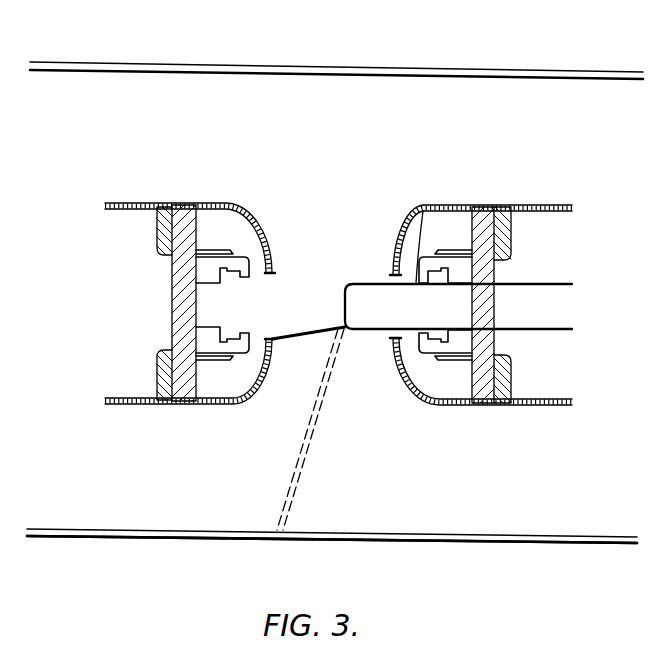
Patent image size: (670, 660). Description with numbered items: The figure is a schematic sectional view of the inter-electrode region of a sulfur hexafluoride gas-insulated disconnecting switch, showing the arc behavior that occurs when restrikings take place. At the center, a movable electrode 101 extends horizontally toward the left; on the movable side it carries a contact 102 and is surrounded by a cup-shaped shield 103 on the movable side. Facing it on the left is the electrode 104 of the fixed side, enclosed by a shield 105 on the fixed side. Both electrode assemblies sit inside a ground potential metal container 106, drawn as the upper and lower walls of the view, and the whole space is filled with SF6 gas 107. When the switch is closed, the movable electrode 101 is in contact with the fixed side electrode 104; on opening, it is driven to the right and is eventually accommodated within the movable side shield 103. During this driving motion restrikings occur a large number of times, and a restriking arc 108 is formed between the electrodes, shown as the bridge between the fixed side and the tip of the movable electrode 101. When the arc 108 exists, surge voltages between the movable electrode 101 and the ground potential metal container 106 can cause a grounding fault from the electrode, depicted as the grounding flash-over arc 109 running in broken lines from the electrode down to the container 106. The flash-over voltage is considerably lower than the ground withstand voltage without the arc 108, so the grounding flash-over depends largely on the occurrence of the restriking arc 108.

The movable electrode 101 is at (362, 282).
The contact on the movable side 102 is at (432, 232).
The shield on the movable side 103 is at (409, 222).
The electrode of the fixed side 104 is at (246, 350).
The shield on fixed side 105 is at (268, 375).
The ground potential metal container 106 is at (208, 62).
The SF6 gas 107 is at (535, 505).
The restriking arc 108 is at (307, 330).
The grounding flash-over arc 109 is at (292, 497).